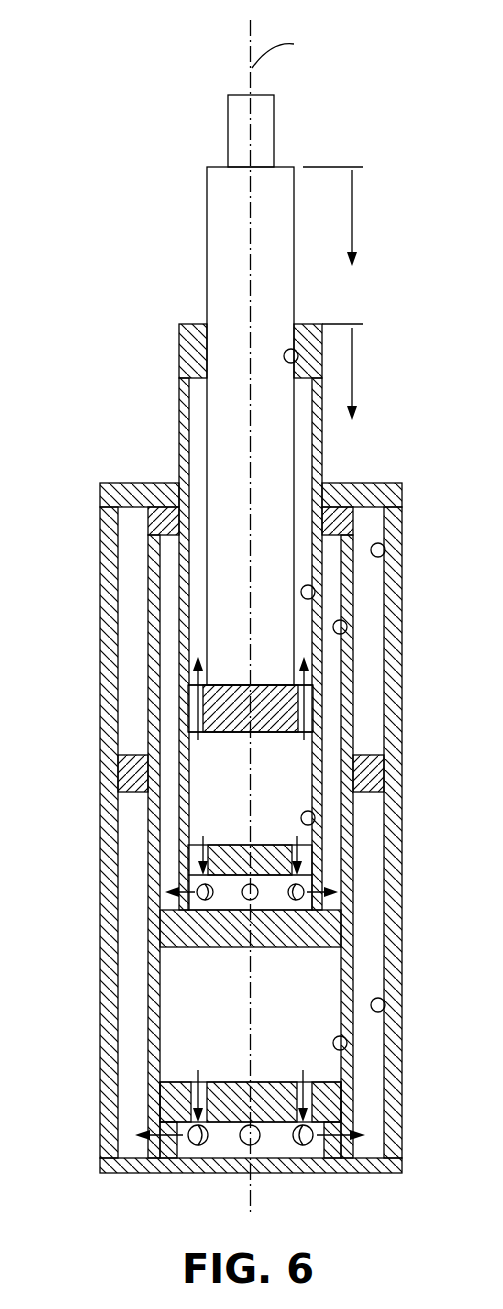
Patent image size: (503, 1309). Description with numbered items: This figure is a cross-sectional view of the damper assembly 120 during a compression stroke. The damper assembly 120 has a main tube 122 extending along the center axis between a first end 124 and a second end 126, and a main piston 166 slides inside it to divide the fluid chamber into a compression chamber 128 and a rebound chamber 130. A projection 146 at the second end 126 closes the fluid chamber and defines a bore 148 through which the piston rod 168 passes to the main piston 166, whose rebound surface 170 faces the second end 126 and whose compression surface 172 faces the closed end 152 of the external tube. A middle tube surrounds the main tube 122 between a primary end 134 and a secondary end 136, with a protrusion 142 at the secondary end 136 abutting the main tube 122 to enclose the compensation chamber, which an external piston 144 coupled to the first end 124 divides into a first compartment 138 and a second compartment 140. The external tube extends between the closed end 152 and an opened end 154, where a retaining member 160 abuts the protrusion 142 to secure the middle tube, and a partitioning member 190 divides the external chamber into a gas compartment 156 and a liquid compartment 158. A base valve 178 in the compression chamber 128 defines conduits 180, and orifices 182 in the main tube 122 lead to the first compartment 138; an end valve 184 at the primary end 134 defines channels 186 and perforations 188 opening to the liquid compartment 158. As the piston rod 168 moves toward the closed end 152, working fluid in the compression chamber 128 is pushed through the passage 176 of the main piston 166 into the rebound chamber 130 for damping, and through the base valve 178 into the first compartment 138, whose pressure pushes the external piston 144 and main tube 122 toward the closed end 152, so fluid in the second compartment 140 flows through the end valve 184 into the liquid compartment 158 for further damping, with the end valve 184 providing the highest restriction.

The damper assembly 120 is at (116, 315).
The main tube 122 is at (182, 404).
The first end 124 is at (345, 912).
The second end 126 is at (309, 324).
The compression chamber 128 is at (315, 820).
The rebound chamber 130 is at (316, 598).
The primary end 134 is at (345, 1095).
The secondary end 136 is at (355, 520).
The first compartment 138 is at (347, 632).
The second compartment 140 is at (347, 1046).
The protrusion 142 is at (330, 520).
The external piston 144 is at (165, 930).
The projection 146 is at (196, 324).
The bore 148 is at (296, 362).
The closed end 152 is at (102, 1170).
The opened end 154 is at (110, 490).
The gas compartment 156 is at (385, 555).
The liquid compartment 158 is at (385, 1006).
The retaining member 160 is at (145, 493).
The main piston 166 is at (318, 700).
The piston rod 168 is at (283, 182).
The rebound surface 170 is at (264, 685).
The compression surface 172 is at (265, 734).
The passage 176 is at (195, 710).
The base valve 178 is at (172, 860).
The conduit 180 is at (220, 845).
The orifice 182 is at (322, 892).
The end valve 184 is at (150, 1097).
The channel 186 is at (196, 1118).
The perforation 188 is at (305, 1146).
The partitioning member 190 is at (378, 776).